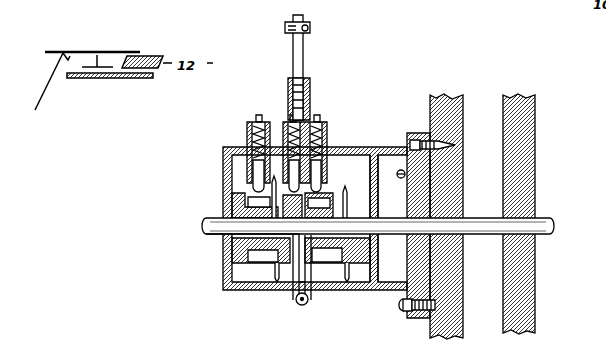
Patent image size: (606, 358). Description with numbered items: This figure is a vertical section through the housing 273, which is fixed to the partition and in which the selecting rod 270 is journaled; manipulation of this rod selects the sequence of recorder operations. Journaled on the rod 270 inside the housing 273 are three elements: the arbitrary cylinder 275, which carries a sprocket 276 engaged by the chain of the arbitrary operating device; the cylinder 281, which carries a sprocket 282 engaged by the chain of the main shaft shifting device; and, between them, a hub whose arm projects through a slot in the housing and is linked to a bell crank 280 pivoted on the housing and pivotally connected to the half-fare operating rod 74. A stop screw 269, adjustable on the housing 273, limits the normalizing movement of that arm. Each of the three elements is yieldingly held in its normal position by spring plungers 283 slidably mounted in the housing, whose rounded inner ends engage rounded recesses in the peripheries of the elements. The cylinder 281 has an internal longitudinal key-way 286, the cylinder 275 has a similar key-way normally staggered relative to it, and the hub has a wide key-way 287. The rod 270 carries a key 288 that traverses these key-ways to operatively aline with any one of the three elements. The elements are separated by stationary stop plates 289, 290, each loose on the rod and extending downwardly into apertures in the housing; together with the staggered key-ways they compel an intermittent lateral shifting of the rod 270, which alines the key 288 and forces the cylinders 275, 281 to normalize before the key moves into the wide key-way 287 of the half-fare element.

The half-fare operating rod 74 is at (309, 28).
The bell crank 280 is at (302, 62).
The spring plungers 283 is at (316, 116).
The housing 273 is at (381, 139).
The sprocket 276 is at (345, 186).
The cylinder 281 is at (248, 197).
The selecting rod 270 is at (215, 221).
The key-way 286 is at (225, 238).
The key 288 is at (256, 252).
The sprocket 282 is at (276, 270).
The cylinder 275 is at (342, 261).
The stop plate 290 is at (294, 285).
The wide key-way 287 is at (302, 300).
The stop screw 269 is at (309, 303).
The stop plate 289 is at (312, 290).